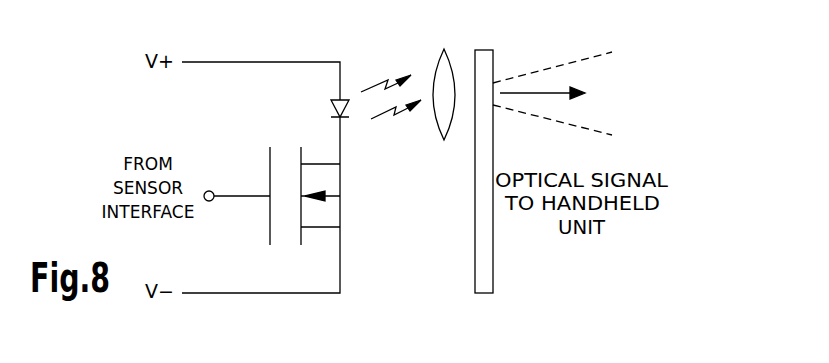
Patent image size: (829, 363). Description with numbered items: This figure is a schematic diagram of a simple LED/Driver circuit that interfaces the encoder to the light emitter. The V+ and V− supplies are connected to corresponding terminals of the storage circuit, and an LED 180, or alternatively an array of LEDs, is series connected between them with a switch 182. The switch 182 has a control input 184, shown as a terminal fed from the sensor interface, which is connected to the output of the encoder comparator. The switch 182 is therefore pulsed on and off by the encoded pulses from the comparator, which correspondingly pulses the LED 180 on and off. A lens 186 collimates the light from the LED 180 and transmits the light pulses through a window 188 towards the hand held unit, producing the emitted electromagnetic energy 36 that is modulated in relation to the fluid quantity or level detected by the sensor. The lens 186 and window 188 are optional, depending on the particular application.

The LED 180 is at (334, 109).
The switch 182 is at (270, 161).
The control input 184 is at (214, 201).
The lens 186 is at (437, 68).
The window 188 is at (493, 67).
The electromagnetic energy 36 is at (576, 57).